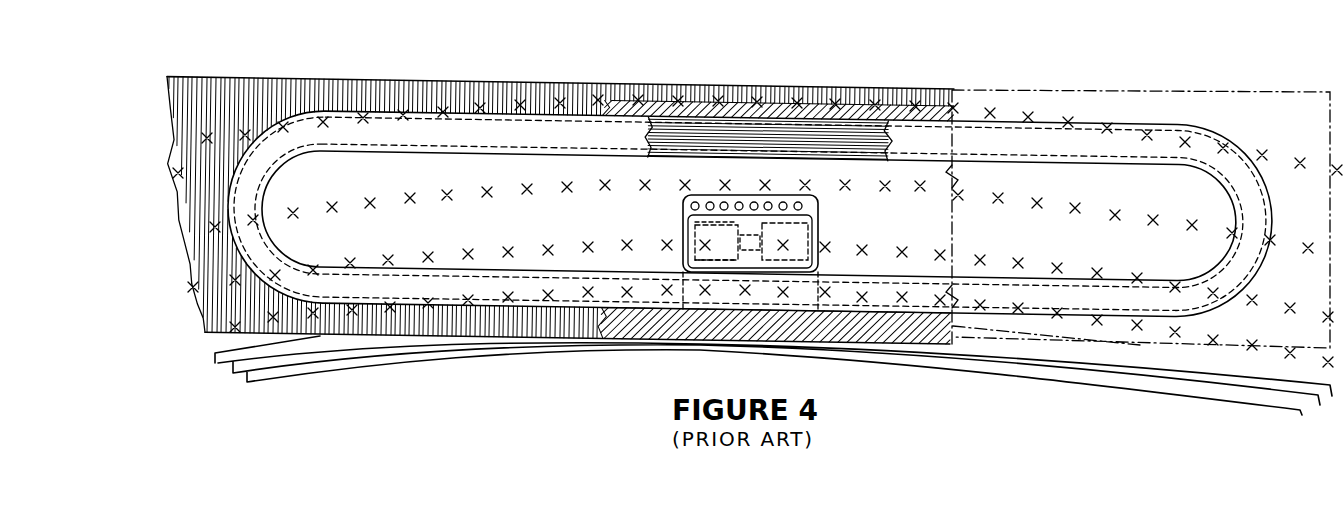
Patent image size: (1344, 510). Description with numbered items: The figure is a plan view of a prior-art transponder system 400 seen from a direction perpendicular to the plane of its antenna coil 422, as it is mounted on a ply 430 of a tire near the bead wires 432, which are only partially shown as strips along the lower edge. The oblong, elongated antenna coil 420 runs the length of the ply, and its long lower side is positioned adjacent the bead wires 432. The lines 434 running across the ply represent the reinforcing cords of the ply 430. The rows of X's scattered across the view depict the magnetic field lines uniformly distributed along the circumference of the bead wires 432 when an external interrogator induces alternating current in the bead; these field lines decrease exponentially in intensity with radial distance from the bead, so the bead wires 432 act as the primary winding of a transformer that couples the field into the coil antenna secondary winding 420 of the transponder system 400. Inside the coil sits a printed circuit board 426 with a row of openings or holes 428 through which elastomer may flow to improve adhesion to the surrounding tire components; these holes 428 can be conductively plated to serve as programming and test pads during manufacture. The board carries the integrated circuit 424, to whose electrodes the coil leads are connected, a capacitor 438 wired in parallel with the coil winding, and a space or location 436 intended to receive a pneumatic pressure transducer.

The transponder system 400 is at (1018, 57).
The antenna coil 420 is at (676, 221).
The antenna coil 422 is at (847, 132).
The integrated circuit 424 is at (718, 252).
The printed circuit board 426 is at (818, 233).
The openings or holes 428 is at (762, 204).
The ply 430 is at (1167, 103).
The bead wires 432 is at (1163, 378).
The lines representing reinforcing cords 434 is at (383, 92).
The space or location for pneumatic pressure transducer 436 is at (818, 212).
The capacitor 438 is at (752, 258).